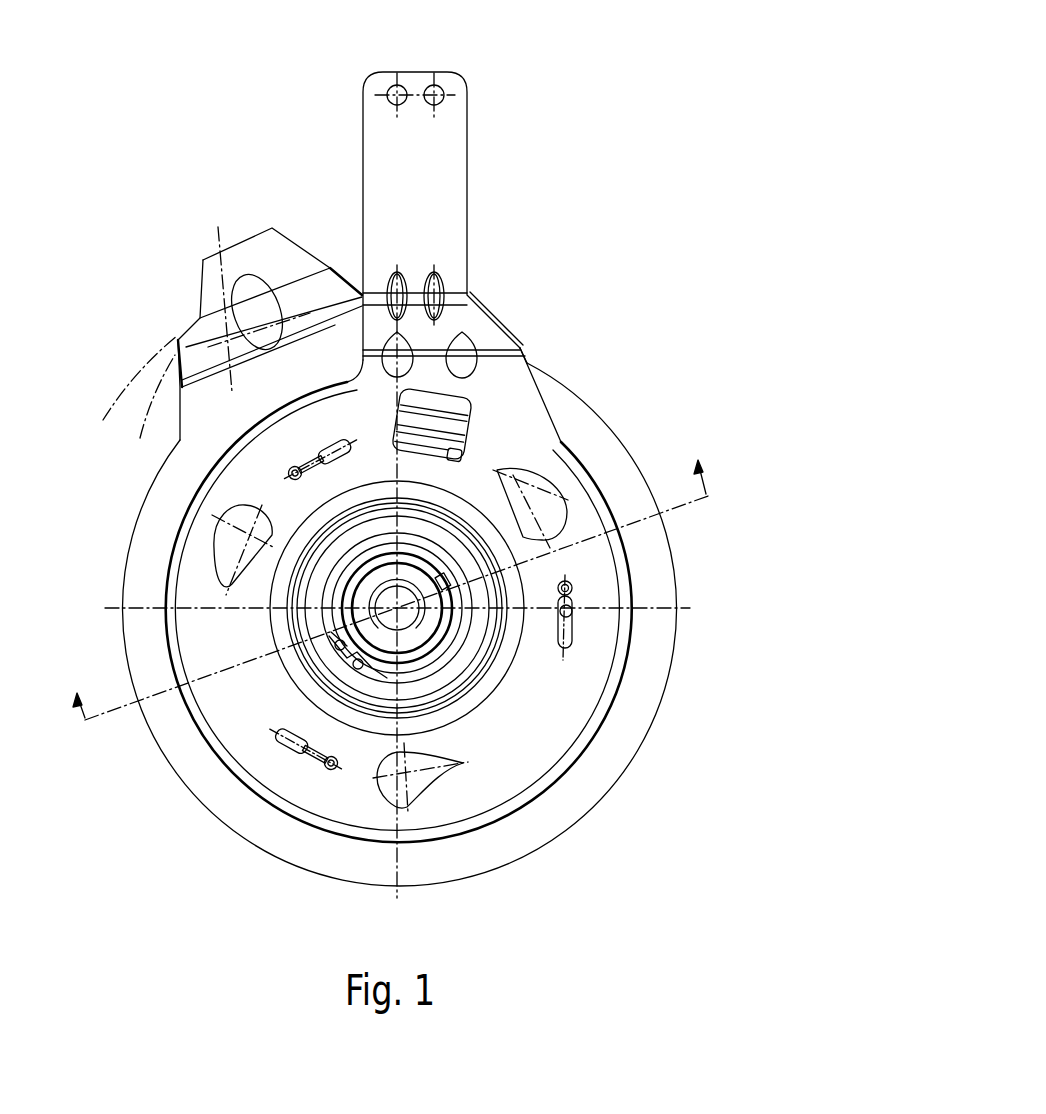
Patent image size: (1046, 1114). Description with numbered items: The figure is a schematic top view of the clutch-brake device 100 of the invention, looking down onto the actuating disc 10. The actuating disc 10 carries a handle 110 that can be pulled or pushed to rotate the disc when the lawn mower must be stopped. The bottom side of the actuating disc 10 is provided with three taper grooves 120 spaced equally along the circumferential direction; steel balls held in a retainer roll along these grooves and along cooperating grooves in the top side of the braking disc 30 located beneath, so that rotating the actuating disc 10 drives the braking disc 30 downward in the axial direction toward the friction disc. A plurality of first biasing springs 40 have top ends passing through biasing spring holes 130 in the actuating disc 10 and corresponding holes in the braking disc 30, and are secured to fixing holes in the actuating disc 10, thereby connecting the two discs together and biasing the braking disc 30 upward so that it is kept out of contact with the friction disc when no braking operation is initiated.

The clutch-brake device 100 is at (640, 123).
The handle 110 is at (398, 150).
The braking disc 30 is at (232, 392).
The actuating disc 10 is at (527, 442).
The first biasing spring 40 is at (567, 593).
The biasing spring hole 130 is at (567, 637).
The taper groove 120 is at (388, 788).